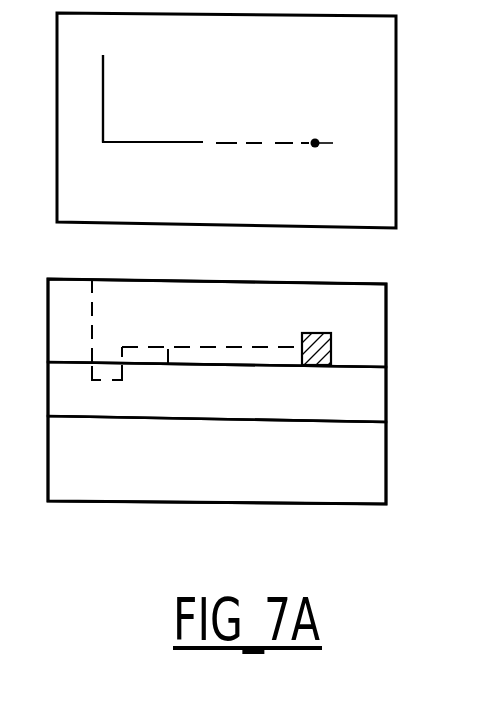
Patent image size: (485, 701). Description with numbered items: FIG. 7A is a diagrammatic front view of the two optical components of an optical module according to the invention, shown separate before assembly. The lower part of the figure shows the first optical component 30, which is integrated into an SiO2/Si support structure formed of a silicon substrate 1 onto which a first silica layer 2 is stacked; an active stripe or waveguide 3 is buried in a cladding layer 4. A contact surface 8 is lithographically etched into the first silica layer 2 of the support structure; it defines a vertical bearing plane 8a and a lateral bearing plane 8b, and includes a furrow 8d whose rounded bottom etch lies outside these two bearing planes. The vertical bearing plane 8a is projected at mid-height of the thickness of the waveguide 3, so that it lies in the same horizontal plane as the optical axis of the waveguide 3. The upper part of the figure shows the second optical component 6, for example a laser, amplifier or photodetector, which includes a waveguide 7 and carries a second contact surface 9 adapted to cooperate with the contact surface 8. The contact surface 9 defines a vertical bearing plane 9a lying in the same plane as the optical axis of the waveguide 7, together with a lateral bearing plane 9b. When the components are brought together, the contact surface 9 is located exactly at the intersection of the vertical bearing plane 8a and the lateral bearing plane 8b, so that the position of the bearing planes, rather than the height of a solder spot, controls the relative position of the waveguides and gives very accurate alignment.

The silicon substrate 1 is at (60, 457).
The first silica layer 2 is at (62, 393).
The optical waveguide 3 is at (331, 343).
The cladding layer 4 is at (62, 328).
The second optical component 6 is at (390, 63).
The waveguide 7 is at (320, 142).
The first contact surface 8 is at (147, 311).
The vertical bearing plane 8a is at (140, 347).
The lateral bearing plane 8b is at (92, 305).
The furrow 8d is at (112, 381).
The second contact surface 9 is at (154, 101).
The vertical bearing plane 9a is at (187, 142).
The lateral bearing plane 9b is at (103, 80).
The first optical component 30 is at (398, 361).